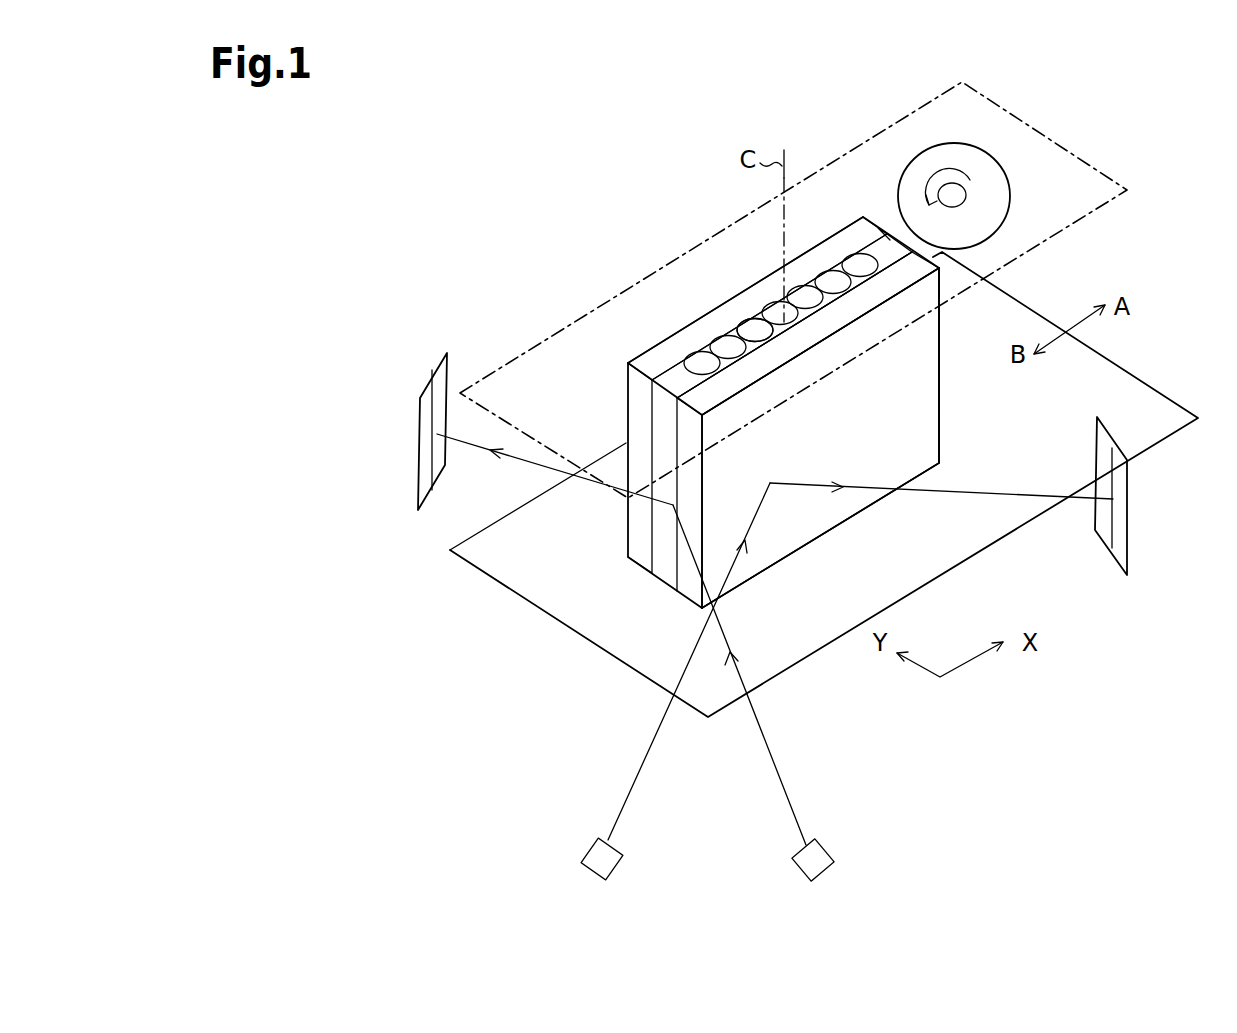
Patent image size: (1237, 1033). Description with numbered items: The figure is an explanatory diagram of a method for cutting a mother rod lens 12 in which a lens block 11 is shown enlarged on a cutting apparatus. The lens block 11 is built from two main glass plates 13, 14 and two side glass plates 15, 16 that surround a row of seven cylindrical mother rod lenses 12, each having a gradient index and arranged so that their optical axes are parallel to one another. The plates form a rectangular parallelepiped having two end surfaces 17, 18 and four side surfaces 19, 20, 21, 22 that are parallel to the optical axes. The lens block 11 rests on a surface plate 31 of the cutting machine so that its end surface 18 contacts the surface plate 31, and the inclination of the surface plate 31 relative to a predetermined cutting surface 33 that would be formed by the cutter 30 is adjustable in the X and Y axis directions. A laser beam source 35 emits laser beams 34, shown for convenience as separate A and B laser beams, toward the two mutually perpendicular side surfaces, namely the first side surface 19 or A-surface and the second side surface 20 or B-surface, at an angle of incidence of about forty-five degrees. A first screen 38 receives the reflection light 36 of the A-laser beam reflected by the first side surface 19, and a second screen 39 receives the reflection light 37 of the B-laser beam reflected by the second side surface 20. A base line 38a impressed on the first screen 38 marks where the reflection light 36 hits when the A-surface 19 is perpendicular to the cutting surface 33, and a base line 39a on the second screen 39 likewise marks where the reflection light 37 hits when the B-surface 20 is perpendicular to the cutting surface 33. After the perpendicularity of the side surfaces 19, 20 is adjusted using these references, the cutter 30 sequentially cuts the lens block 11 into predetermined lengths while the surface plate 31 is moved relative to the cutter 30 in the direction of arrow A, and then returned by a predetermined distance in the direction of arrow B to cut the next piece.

The lens block 11 is at (750, 253).
The mother rod lens 12 is at (760, 334).
The main glass plate 13 is at (940, 346).
The main glass plate 14 is at (694, 328).
The side glass plate 15 is at (662, 372).
The side glass plate 16 is at (866, 242).
The end surface 17 is at (733, 305).
The end surface 18 is at (830, 529).
The first side surface 19 is at (930, 387).
The second side surface 20 is at (627, 421).
The side surface 21 is at (831, 250).
The side surface 22 is at (897, 242).
The cutter 30 is at (953, 152).
The surface plate 31 is at (569, 627).
The predetermined cutting surface 33 is at (845, 154).
The laser beam 34 is at (638, 787).
The laser beam source 35 is at (590, 856).
The reflection light 36 is at (948, 492).
The reflection light 37 is at (477, 449).
The first screen 38 is at (1113, 556).
The base line 38a is at (1118, 502).
The second screen 39 is at (437, 372).
The base line 39a is at (432, 438).